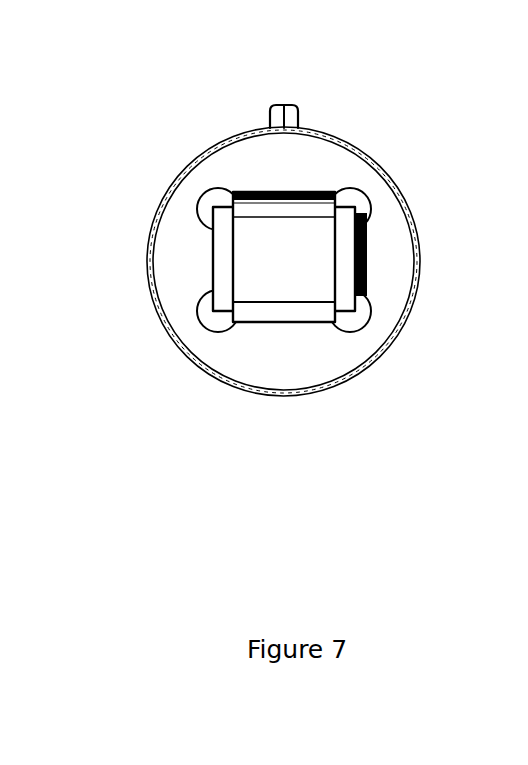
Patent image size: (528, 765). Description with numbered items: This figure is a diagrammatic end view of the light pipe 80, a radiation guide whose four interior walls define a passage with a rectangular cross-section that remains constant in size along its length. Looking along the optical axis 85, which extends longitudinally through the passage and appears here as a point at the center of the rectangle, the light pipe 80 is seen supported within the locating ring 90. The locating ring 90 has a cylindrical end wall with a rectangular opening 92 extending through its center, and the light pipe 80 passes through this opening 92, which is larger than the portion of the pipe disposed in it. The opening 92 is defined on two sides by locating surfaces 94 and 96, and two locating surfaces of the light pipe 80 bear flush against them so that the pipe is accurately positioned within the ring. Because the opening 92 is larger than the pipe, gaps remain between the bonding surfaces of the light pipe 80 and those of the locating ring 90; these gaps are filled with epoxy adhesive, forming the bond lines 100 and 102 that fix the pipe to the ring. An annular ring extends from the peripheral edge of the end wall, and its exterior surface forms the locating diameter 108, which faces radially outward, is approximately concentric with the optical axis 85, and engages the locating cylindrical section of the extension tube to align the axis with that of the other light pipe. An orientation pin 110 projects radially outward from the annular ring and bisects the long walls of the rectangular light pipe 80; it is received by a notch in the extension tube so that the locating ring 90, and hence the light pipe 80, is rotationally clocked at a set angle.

The locating ring 90 is at (144, 204).
The locating diameter 108 is at (177, 177).
The orientation pin 110 is at (281, 105).
The light pipe 80 is at (260, 315).
The locating surface 96 is at (216, 248).
The rectangular opening 92 is at (362, 315).
The optical axis 85 is at (283, 262).
The locating surface 94 is at (275, 320).
The bond line 100 is at (317, 191).
The bond line 102 is at (369, 298).